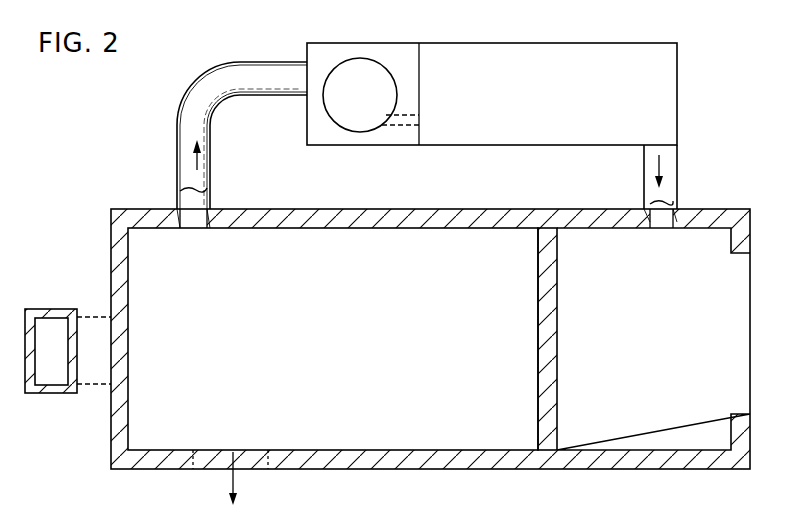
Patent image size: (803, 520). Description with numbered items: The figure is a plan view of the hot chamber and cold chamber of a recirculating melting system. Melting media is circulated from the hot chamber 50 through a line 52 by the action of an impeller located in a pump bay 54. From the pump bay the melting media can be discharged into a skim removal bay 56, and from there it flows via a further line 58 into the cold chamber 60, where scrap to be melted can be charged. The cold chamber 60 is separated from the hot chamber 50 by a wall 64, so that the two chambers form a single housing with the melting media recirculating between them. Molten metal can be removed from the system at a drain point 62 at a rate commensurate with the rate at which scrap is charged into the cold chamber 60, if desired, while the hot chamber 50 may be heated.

The hot chamber 50 is at (347, 354).
The line 52 is at (213, 182).
The pump bay 54 is at (353, 67).
The skim removal bay 56 is at (552, 43).
The line 58 is at (677, 172).
The cold chamber 60 is at (662, 354).
The molten metal removal point 62 is at (236, 478).
The wall 64 is at (550, 283).